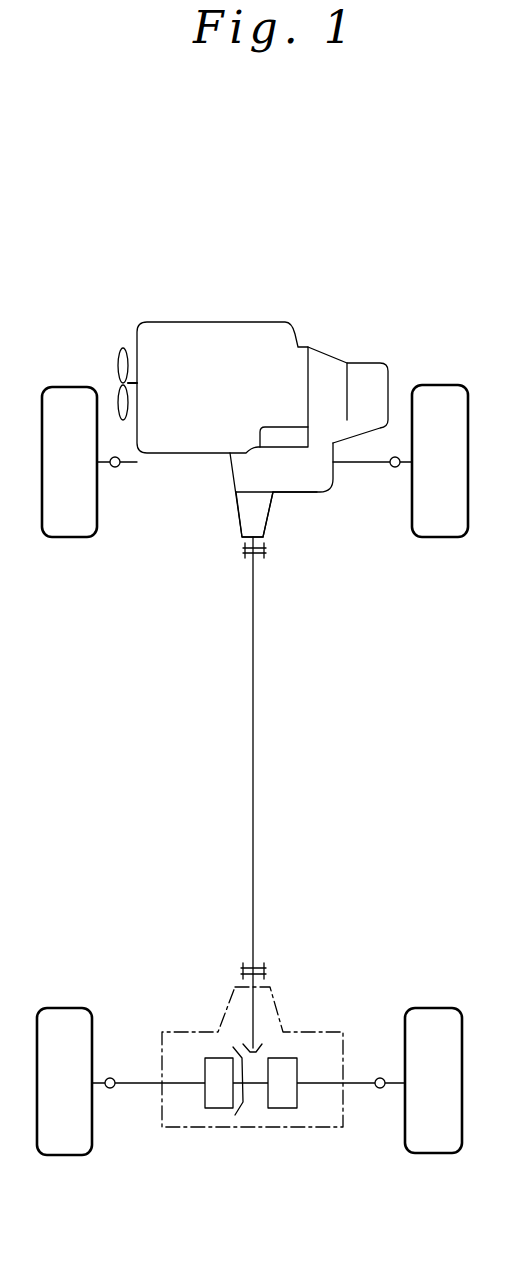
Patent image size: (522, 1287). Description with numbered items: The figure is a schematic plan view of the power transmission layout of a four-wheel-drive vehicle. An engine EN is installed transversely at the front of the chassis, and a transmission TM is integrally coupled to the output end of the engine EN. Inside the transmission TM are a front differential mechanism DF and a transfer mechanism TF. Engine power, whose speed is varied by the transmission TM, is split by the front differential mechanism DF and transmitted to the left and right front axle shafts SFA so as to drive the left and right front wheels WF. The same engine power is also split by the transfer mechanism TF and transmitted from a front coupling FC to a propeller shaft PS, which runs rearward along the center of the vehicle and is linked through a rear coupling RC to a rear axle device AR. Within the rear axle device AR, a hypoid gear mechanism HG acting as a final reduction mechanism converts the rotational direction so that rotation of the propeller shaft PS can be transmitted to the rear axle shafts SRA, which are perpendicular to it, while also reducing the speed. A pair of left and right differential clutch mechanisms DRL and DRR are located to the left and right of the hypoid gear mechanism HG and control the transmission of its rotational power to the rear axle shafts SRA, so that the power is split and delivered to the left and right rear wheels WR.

The engine EN is at (207, 333).
The transmission TM is at (362, 380).
The front differential mechanism DF is at (288, 482).
The transfer mechanism TF is at (247, 518).
The front axle shafts SFA is at (160, 463).
The front wheels WF is at (65, 540).
The front coupling FC is at (243, 557).
The propeller shaft PS is at (253, 738).
The rear coupling RC is at (266, 968).
The rear axle device AR is at (175, 1037).
The rear axle shafts SRA is at (133, 1083).
The hypoid gear mechanism HG is at (247, 1100).
The left differential clutch mechanism DRL is at (218, 1098).
The right differential clutch mechanism DRR is at (278, 1108).
The rear wheels WR is at (65, 1153).